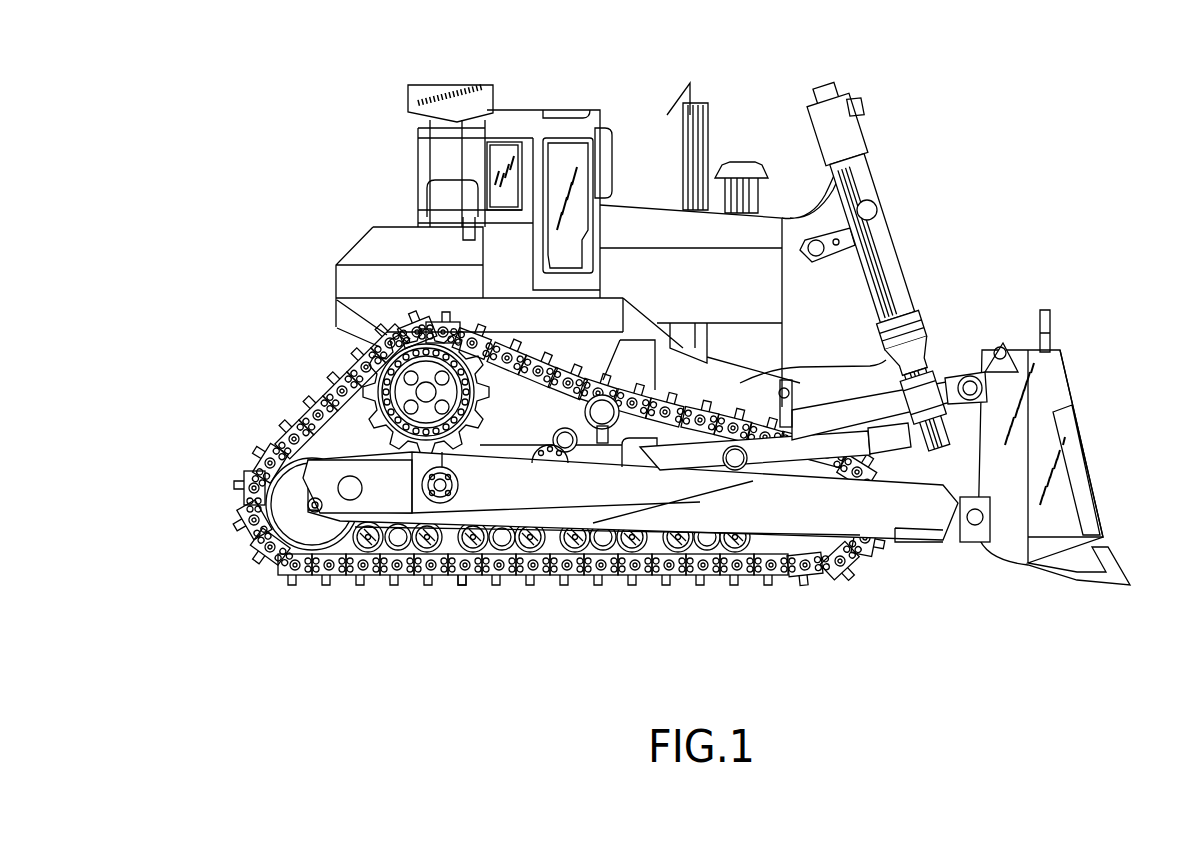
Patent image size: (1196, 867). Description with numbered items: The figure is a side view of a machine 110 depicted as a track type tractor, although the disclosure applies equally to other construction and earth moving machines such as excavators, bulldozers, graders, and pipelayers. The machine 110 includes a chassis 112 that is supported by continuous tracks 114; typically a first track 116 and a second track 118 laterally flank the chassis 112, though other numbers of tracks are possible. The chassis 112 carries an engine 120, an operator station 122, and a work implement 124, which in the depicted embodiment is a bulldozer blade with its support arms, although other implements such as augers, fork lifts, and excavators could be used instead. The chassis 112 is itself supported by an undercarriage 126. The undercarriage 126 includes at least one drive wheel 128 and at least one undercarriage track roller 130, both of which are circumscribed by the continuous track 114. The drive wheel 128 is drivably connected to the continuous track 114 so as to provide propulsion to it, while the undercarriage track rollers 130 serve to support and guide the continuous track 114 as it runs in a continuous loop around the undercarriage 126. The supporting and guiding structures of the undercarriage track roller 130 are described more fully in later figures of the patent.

The machine 110 is at (866, 35).
The chassis 112 is at (885, 368).
The continuous tracks 114 is at (573, 595).
The first track 116 is at (445, 582).
The second track 118 is at (288, 271).
The engine 120 is at (755, 302).
The operator station 122 is at (518, 133).
The work implement 124 is at (1082, 487).
The undercarriage 126 is at (521, 416).
The drive wheel 128 is at (345, 393).
The undercarriage track roller 130 is at (776, 580).